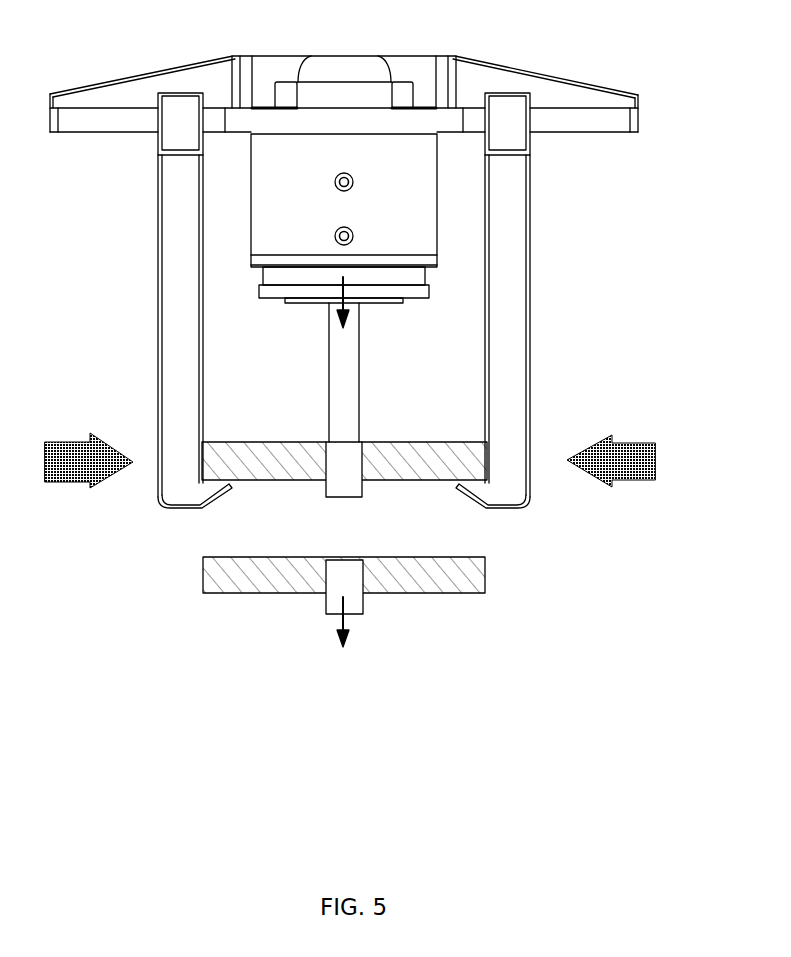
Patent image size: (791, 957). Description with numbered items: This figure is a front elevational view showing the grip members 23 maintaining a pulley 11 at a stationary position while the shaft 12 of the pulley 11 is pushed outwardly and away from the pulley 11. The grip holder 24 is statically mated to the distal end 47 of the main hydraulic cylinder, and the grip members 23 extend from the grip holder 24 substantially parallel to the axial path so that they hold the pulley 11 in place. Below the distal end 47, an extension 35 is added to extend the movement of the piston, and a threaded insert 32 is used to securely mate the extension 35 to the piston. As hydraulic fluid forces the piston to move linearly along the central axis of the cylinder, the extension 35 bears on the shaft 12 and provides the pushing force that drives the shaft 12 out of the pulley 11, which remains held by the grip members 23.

The pulley 11 is at (434, 473).
The shaft 12 is at (338, 488).
The grip members 23 is at (175, 241).
The grip holder 24 is at (615, 78).
The threaded insert 32 is at (298, 308).
The extension 35 is at (350, 346).
The distal end 47 is at (331, 140).